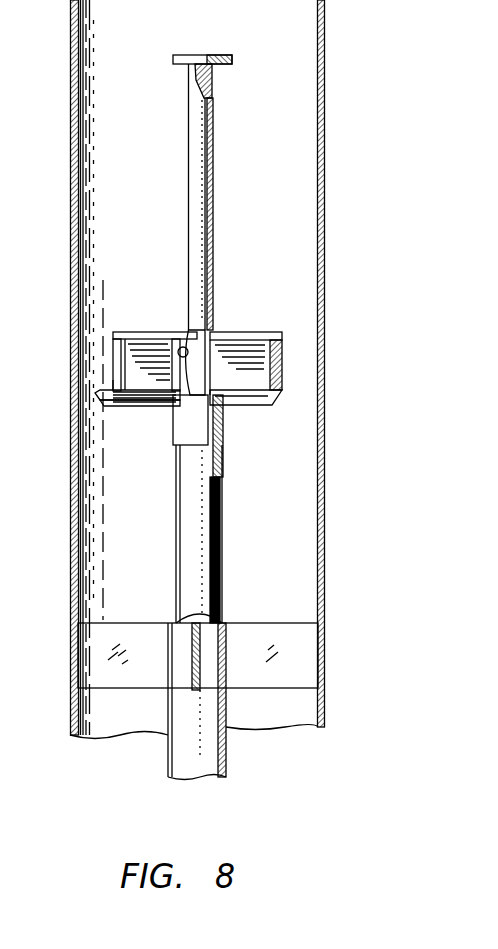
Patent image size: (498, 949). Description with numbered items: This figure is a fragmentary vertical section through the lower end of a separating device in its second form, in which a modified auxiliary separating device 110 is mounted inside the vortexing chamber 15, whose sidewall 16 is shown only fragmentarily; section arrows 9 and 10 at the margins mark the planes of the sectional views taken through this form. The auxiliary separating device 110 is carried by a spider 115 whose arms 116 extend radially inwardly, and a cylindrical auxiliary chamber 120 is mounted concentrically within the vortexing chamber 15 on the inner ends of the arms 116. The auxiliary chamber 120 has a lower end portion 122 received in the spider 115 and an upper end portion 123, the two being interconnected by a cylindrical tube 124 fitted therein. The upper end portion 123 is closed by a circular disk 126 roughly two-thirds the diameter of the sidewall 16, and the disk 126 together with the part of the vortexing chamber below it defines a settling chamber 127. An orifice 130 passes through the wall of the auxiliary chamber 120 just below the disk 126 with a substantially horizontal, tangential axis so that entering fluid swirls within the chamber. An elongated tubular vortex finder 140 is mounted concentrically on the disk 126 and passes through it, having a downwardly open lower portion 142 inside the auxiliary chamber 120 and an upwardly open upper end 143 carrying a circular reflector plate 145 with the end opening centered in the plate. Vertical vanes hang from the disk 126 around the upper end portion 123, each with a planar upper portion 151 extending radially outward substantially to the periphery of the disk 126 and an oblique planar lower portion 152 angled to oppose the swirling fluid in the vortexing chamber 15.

The section line 9- 9 is at (37, 0).
The section line 10- 10 is at (199, 393).
The vortexing chamber 15 is at (327, 195).
The sidewall 16 is at (317, 150).
The auxiliary separating device 110 is at (282, 290).
The spider 115 is at (325, 657).
The arms 116 is at (154, 674).
The auxiliary chamber 120 is at (230, 560).
The lower end portion 122 is at (188, 752).
The upper end portion 123 is at (190, 420).
The cylindrical tube 124 is at (192, 538).
The circular plate or disk 126 is at (156, 331).
The settling chamber 127 is at (300, 510).
The bore or orifice 130 is at (182, 346).
The tubular vortex finder 140 is at (203, 208).
The lower portion 142 is at (228, 402).
The upper end 143 is at (197, 72).
The reflector plate 145 is at (217, 57).
The upper portion 151 is at (139, 380).
The lower portion 152 is at (159, 400).